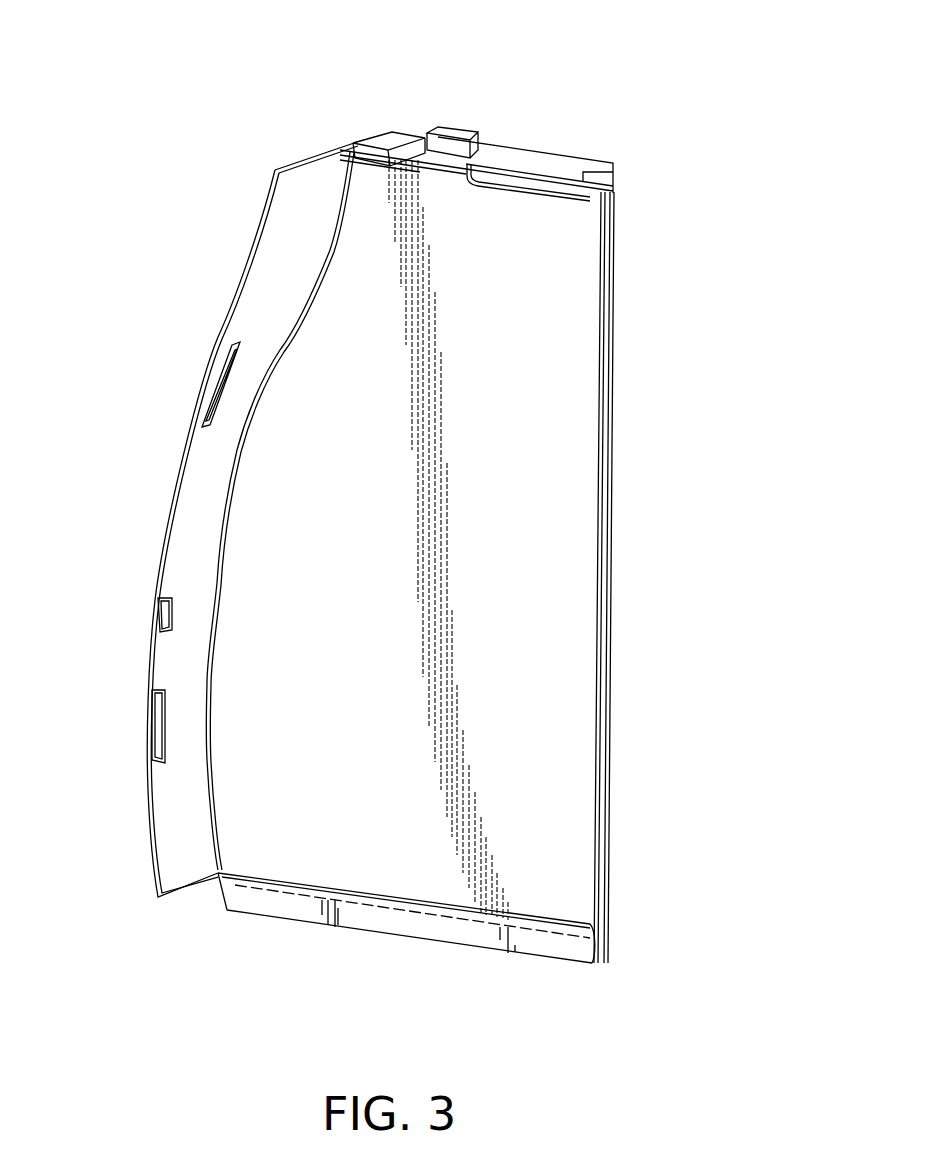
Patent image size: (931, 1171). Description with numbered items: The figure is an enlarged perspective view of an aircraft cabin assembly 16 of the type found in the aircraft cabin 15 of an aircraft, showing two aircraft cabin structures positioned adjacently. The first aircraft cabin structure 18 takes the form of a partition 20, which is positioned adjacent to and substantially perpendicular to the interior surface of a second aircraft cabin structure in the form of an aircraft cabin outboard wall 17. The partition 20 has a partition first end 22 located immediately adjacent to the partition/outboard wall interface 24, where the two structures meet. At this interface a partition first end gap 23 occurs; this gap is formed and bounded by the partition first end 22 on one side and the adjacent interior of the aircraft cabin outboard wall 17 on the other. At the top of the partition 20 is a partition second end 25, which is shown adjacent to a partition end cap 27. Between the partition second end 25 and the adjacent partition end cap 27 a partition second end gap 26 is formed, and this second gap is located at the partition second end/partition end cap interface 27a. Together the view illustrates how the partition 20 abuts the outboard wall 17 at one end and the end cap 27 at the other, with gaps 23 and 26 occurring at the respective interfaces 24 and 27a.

The aircraft cabin 15 is at (783, 547).
The aircraft cabin assembly 16 is at (660, 428).
The aircraft cabin outboard wall 17 is at (263, 273).
The first aircraft cabin structure 18 is at (570, 655).
The partition 20 is at (570, 743).
The partition first end 22 is at (225, 507).
The partition first end gap 23 is at (333, 153).
The partition/outboard wall interface 24 is at (263, 398).
The partition second end 25 is at (540, 195).
The partition second end gap 26 is at (610, 188).
The partition end cap 27 is at (398, 143).
The partition second end/partition end cap interface 27a is at (517, 180).